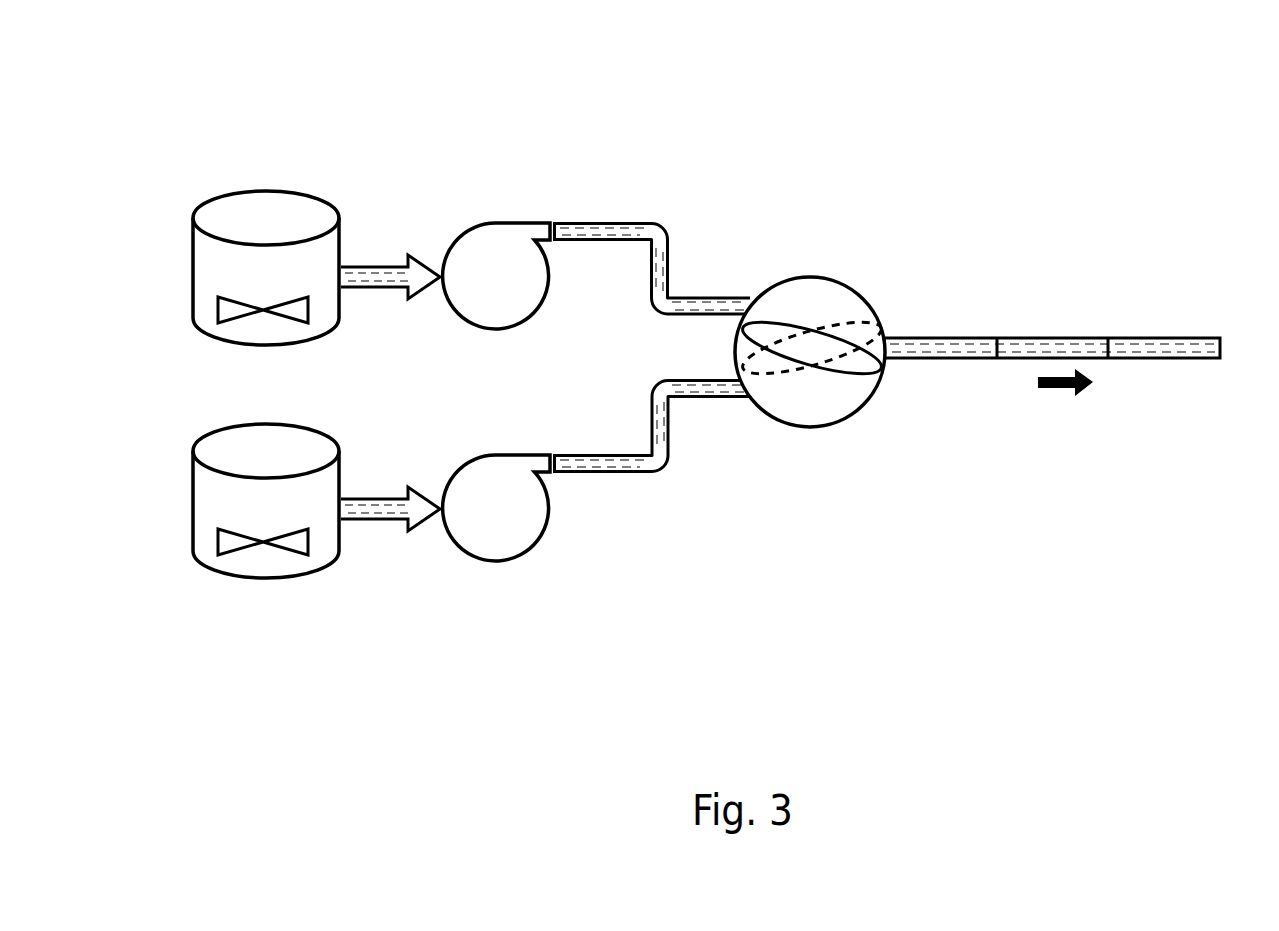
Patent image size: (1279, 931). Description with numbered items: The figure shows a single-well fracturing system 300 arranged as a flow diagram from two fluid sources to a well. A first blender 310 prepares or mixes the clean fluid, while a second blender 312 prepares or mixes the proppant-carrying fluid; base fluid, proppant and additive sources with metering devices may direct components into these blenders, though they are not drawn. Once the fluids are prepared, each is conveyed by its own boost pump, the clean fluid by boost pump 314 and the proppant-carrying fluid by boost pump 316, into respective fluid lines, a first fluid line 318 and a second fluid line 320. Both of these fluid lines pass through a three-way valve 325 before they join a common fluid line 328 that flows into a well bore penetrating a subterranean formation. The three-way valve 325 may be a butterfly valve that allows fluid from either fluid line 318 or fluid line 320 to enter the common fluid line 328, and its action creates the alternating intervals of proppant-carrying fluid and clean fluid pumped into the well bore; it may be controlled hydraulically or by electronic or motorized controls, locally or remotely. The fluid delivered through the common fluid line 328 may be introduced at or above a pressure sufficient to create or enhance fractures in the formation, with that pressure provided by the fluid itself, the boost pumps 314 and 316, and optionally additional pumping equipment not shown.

The fracturing system 300 is at (998, 60).
The first blender 310 is at (343, 313).
The second blender 312 is at (343, 543).
The boost pump 314 is at (505, 232).
The boost pump 316 is at (505, 464).
The fluid line 318 is at (665, 228).
The fluid line 320 is at (668, 467).
The three-way valve 325 is at (812, 330).
The common fluid line 328 is at (945, 338).